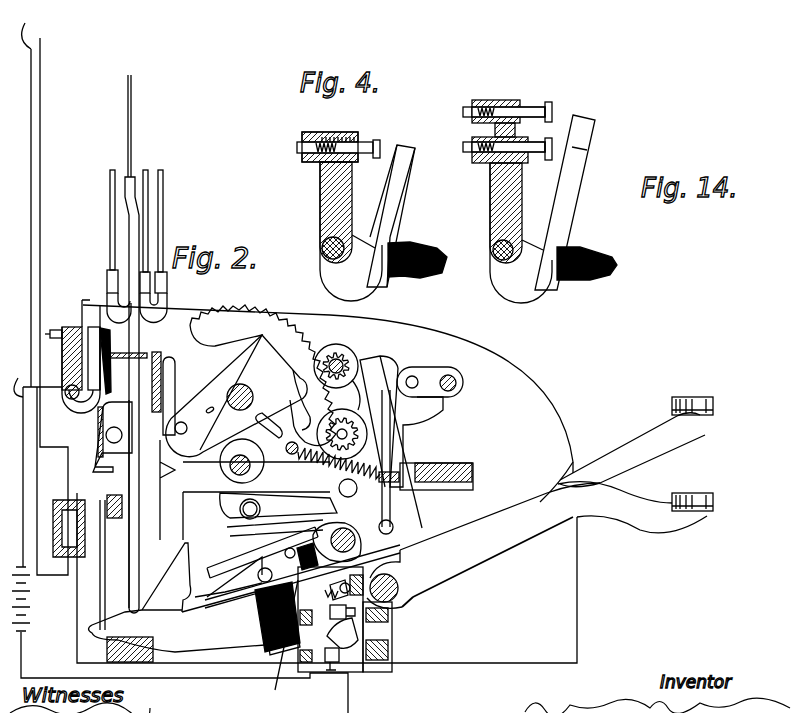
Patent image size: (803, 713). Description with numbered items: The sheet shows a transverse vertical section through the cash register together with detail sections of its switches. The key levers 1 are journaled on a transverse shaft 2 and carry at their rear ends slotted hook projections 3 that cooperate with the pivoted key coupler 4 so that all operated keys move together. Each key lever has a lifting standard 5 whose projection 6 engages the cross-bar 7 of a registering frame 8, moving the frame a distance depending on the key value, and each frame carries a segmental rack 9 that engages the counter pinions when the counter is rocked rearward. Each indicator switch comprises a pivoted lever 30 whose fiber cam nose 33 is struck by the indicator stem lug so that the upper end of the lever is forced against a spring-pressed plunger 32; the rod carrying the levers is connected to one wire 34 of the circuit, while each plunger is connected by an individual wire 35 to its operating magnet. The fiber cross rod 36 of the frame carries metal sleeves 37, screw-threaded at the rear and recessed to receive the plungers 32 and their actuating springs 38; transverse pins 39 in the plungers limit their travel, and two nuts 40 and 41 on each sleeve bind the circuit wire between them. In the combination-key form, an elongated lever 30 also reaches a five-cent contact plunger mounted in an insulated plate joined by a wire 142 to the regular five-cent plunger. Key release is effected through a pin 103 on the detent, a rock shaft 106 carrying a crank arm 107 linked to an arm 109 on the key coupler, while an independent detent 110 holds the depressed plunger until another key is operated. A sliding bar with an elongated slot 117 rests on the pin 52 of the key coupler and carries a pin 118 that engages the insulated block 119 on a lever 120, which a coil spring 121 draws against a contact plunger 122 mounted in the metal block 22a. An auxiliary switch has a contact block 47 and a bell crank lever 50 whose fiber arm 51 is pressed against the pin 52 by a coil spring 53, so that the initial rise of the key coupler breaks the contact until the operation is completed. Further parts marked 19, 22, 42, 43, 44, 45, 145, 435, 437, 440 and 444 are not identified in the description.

In FIG. 2, the key lever 1 is at (228, 580).
In FIG. 2, the transverse shaft 2 is at (327, 484).
In FIG. 2, the slotted hook projection 3 is at (178, 607).
In FIG. 2, the key coupler 4 is at (645, 490).
In FIG. 2, the lifting standard 5 is at (137, 493).
In FIG. 2, the projection 6 is at (178, 463).
In FIG. 2, the cross-bar 7 is at (183, 420).
In FIG. 2, the registering frame 8 is at (236, 396).
In FIG. 2, the segmental rack 9 is at (263, 377).
In FIG. 2, the lead wire 19 is at (286, 639).
In FIG. 2, the pivoted hand lever 22 is at (398, 586).
In FIG. 2, the metal block 22a is at (311, 576).
In FIG. 2, the pivoted lever 30 is at (96, 327).
In FIG. 4, the pivoted lever 30 is at (351, 231).
In FIG. 14, the pivoted lever 30 is at (570, 180).
In FIG. 2, the spring-pressed plunger 32 is at (67, 313).
In FIG. 4, the spring-pressed plunger 32 is at (405, 145).
In FIG. 2, the fiber cam nose 33 is at (123, 361).
In FIG. 4, the fiber cam nose 33 is at (430, 250).
In FIG. 14, the fiber cam nose 33 is at (590, 255).
In FIG. 2, the circuit wire 34 is at (52, 370).
In FIG. 4, the circuit wire 34 is at (322, 247).
In FIG. 14, the circuit wire 34 is at (495, 258).
In FIG. 2, the individual wire 35 is at (107, 246).
In FIG. 4, the fiber cross rod 36 is at (320, 180).
In FIG. 14, the fiber cross rod 36 is at (492, 180).
In FIG. 4, the metal sleeve 37 is at (360, 140).
In FIG. 4, the actuating spring 38 is at (333, 136).
In FIG. 4, the transverse pin 39 is at (298, 148).
In FIG. 2, the nut 40 is at (345, 357).
In FIG. 4, the nut 40 is at (302, 136).
In FIG. 2, the nut 41 is at (162, 378).
In FIG. 2, the vertical rod 42 is at (139, 545).
In FIG. 2, the upper rod 43 is at (131, 133).
In FIG. 2, the base block / clamp 44 is at (159, 581).
In FIG. 4, the base block / clamp 44 is at (310, 158).
In FIG. 2, the armature plate 45 is at (100, 470).
In FIG. 2, the contact block 47 is at (330, 672).
In FIG. 2, the bell crank lever 50 is at (266, 643).
In FIG. 2, the fiber arm 51 is at (241, 617).
In FIG. 2, the pin 52 is at (258, 579).
In FIG. 2, the coil spring 53 is at (392, 655).
In FIG. 2, the pin 103 is at (405, 420).
In FIG. 2, the rock shaft 106 is at (462, 385).
In FIG. 2, the crank arm 107 is at (433, 368).
In FIG. 2, the arm 109 is at (380, 545).
In FIG. 2, the independent detent 110 is at (288, 499).
In FIG. 2, the elongated slot 117 is at (294, 540).
In FIG. 2, the pin 118 is at (285, 555).
In FIG. 2, the insulated block 119 is at (296, 543).
In FIG. 2, the lever 120 is at (300, 665).
In FIG. 2, the coil spring 121 is at (337, 585).
In FIG. 2, the contact plunger 122 is at (346, 612).
In FIG. 2, the wire 142 is at (396, 512).
In FIG. 2, the coil spring 145 is at (318, 482).
In FIG. 2, the wire 435 is at (22, 197).
In FIG. 2, the battery 437 is at (50, 633).
In FIG. 14, the bracket 440 is at (520, 170).
In FIG. 14, the screws 444 is at (535, 107).